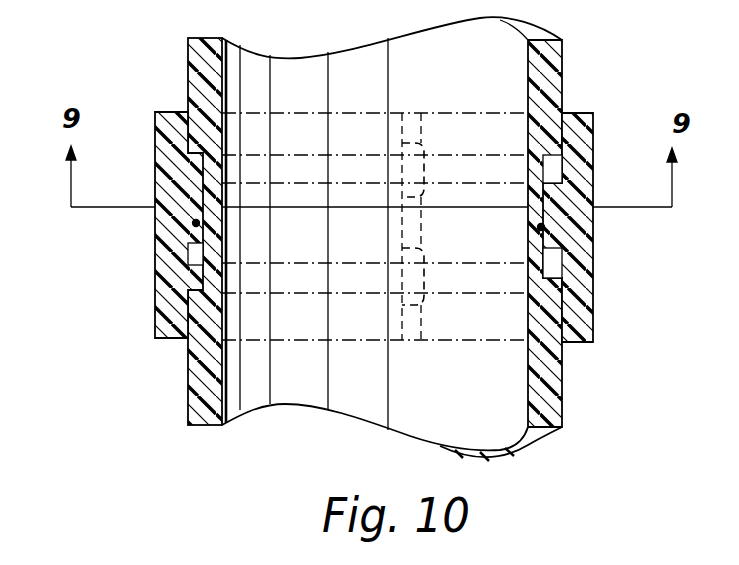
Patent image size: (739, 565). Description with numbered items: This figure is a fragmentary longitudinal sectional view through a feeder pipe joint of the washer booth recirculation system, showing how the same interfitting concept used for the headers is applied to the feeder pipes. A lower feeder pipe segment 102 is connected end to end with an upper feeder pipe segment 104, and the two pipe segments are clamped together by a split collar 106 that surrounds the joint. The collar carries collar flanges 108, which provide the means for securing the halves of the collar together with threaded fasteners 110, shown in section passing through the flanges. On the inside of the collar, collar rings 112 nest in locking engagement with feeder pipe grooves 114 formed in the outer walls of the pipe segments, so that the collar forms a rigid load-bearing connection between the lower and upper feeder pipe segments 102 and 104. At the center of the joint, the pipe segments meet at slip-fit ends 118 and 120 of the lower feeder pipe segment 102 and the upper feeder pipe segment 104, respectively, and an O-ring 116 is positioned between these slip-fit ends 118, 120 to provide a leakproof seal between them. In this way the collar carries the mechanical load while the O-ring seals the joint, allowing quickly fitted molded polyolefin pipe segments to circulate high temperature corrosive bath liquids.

The lower feeder pipe segment 102 is at (562, 398).
The upper feeder pipe segment 104 is at (562, 72).
The split collar 106 is at (602, 312).
The collar flanges 108 is at (362, 332).
The threaded fasteners 110 is at (424, 148).
The collar rings 112 is at (190, 158).
The feeder pipe grooves 114 is at (547, 163).
The O-ring 116 is at (196, 224).
The slip-fit end 118 is at (220, 243).
The slip-fit end 120 is at (545, 227).